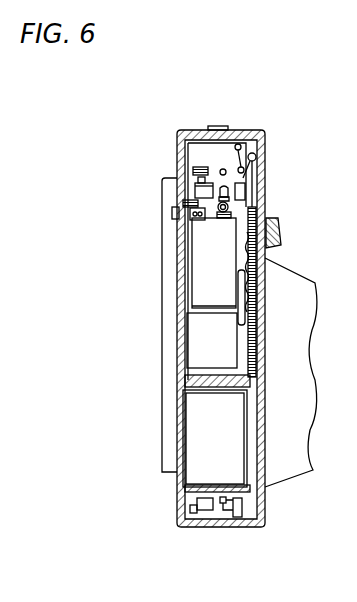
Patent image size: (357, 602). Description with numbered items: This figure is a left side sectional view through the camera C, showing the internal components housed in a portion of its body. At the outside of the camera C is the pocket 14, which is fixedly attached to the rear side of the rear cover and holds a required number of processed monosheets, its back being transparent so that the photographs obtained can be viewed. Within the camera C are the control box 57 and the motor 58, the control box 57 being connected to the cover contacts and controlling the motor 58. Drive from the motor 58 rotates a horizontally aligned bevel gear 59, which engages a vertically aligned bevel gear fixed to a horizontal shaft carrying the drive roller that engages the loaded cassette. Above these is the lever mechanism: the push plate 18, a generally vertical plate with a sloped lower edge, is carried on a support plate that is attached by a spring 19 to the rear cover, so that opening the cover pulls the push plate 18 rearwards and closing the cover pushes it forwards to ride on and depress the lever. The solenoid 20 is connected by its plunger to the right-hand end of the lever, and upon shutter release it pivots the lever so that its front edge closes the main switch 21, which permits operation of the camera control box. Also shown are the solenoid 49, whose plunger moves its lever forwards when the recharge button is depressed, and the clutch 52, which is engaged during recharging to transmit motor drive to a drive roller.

The pocket 14 is at (162, 420).
The push plate 18 is at (193, 180).
The spring 19 is at (193, 212).
The solenoid 20 is at (197, 190).
The main switch 21 is at (250, 178).
The solenoid 49 is at (206, 512).
The clutch 52 is at (237, 517).
The control box 57 is at (193, 352).
The motor 58 is at (205, 275).
The bevel gear 59 is at (233, 213).
The camera C is at (247, 138).